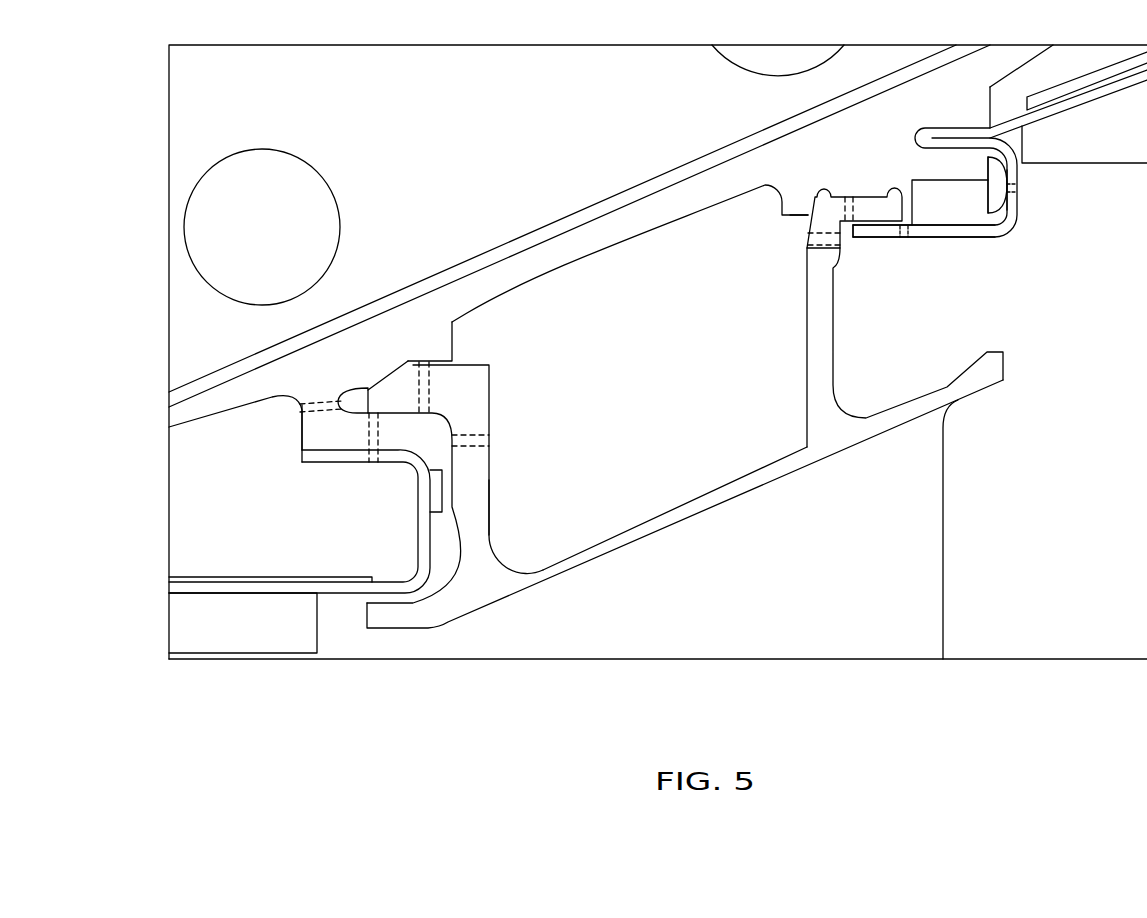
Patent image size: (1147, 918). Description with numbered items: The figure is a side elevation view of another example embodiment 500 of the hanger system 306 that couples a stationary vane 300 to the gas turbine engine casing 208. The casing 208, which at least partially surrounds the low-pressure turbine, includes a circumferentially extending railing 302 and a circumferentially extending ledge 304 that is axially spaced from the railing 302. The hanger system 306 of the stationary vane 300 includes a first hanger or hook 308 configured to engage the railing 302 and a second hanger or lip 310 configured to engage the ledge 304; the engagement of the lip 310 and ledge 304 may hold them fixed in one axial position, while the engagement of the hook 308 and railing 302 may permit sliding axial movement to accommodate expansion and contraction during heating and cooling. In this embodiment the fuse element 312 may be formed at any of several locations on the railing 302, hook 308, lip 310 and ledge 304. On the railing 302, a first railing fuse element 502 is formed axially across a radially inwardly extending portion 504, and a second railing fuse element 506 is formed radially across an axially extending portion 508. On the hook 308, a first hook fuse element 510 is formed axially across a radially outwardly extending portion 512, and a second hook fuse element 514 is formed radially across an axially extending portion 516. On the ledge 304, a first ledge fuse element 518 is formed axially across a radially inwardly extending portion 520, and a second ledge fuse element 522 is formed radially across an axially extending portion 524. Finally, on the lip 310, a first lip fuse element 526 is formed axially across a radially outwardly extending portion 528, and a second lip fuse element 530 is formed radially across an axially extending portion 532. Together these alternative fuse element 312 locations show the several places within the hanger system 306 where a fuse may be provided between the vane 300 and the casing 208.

The turbine section assembly 500 is at (483, 73).
The gas turbine engine casing 208 is at (468, 191).
The stationary vane 300 is at (728, 616).
The railing 302 is at (333, 432).
The ledge 304 is at (975, 233).
The hanger system 306 is at (1005, 302).
The hook 308 is at (480, 378).
The lip 310 is at (863, 207).
The fuse element 312 is at (847, 195).
The first railing fuse element 502 is at (332, 397).
The radially inwardly extending portion of railing 504 is at (313, 428).
The second railing fuse element 506 is at (370, 388).
The axially extending portion of railing 508 is at (393, 440).
The first hook fuse element 510 is at (485, 433).
The radially outwardly extending portion of hook 512 is at (477, 500).
The second hook fuse element 514 is at (423, 364).
The axially extending portion of hook 516 is at (461, 372).
The first ledge fuse element 518 is at (1018, 192).
The radially inwardly extending portion of ledge 520 is at (1013, 205).
The second ledge fuse element 522 is at (910, 232).
The axially extending portion of ledge 524 is at (872, 230).
The first lip fuse element 526 is at (807, 245).
The radially outwardly extending portion of lip 528 is at (807, 378).
The second lip fuse element 530 is at (818, 198).
The axially extending portion of lip 532 is at (880, 208).